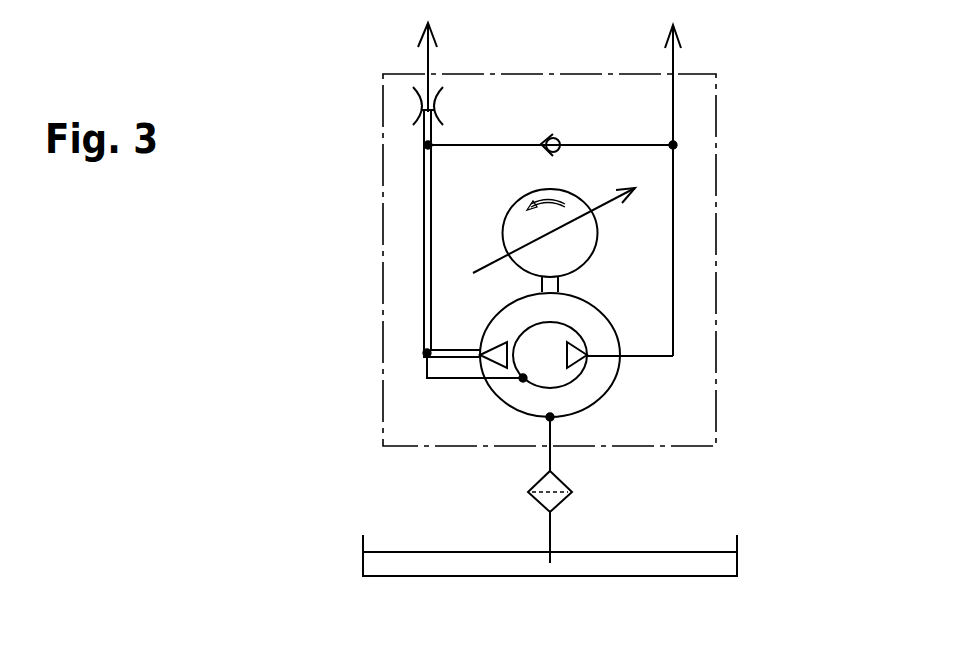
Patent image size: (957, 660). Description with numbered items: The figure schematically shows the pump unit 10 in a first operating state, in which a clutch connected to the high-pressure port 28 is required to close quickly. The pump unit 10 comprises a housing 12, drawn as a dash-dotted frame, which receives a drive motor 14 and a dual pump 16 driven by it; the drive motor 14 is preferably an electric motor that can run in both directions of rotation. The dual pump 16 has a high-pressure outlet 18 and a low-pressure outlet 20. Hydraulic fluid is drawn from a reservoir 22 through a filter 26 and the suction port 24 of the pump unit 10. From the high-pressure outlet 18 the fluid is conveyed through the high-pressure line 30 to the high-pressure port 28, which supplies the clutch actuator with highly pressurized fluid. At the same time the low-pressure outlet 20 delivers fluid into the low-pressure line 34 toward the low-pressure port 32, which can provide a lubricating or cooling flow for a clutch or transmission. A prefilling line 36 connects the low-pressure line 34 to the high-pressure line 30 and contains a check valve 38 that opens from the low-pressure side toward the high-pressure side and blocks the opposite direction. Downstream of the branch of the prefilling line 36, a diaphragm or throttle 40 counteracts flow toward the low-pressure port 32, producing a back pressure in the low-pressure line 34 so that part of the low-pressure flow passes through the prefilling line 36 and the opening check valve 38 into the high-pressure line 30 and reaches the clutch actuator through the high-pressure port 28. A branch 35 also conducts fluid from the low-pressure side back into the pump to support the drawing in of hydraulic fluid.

The pump unit 10 is at (780, 53).
The housing 12 is at (717, 219).
The drive motor 14 is at (598, 243).
The dual pump 16 is at (597, 303).
The high-pressure outlet 18 is at (590, 365).
The low-pressure outlet 20 is at (481, 352).
The reservoir 22 is at (740, 541).
The suction port 24 is at (551, 448).
The filter 26 is at (537, 507).
The high-pressure port 28 is at (673, 72).
The high-pressure line 30 is at (673, 320).
The low-pressure port 32 is at (430, 73).
The low-pressure line 34 is at (424, 202).
The branch 35 is at (458, 378).
The prefilling line 36 is at (494, 145).
The check valve 38 is at (560, 134).
The diaphragm or throttle 40 is at (404, 98).